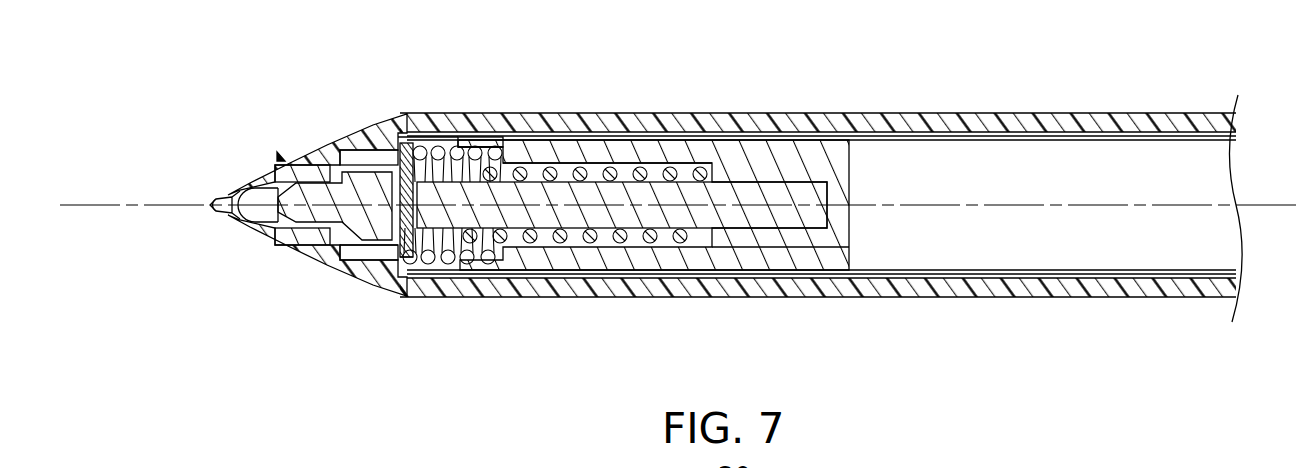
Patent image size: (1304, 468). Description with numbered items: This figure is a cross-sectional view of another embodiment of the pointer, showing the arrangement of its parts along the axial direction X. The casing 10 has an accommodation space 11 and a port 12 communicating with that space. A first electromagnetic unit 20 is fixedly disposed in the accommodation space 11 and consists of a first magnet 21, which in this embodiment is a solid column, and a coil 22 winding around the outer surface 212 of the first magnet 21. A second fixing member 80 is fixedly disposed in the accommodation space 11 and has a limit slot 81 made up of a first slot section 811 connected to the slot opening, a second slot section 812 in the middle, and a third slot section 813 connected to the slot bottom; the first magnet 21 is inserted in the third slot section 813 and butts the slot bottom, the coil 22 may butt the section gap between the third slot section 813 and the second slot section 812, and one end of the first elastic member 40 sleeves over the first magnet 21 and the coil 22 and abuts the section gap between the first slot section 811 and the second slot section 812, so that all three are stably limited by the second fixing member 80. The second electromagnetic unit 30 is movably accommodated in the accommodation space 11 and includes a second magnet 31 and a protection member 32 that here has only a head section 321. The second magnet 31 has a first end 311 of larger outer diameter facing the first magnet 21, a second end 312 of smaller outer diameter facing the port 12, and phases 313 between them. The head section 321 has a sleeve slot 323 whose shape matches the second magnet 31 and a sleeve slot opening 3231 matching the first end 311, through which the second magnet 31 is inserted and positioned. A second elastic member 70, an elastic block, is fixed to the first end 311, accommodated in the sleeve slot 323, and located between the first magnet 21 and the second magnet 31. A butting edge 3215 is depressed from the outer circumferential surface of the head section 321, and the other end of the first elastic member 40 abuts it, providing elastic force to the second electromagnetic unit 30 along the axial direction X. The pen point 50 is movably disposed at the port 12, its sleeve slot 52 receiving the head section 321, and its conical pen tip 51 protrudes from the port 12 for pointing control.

The casing 10 is at (1117, 112).
The accommodation space 11 is at (444, 140).
The port 12 is at (279, 158).
The first electromagnetic unit 20 is at (622, 117).
The first magnet 21 is at (762, 195).
The outer surface 212 is at (598, 163).
The coil 22 is at (595, 117).
The second electromagnetic unit 30 is at (273, 203).
The second magnet 31 is at (388, 170).
The first end 311 is at (463, 146).
The second end 312 is at (290, 160).
The phase 313 is at (333, 150).
The protection member 32 is at (309, 290).
The head section 321 is at (303, 245).
The sleeve slot 323 is at (440, 220).
The butting edge 3215 is at (416, 147).
The sleeve slot opening 3231 is at (417, 250).
The first elastic member 40 is at (503, 150).
The pen point 50 is at (174, 219).
The pen tip 51 is at (212, 205).
The sleeve slot 52 is at (248, 196).
The second elastic member 70 is at (398, 243).
The second fixing member 80 is at (853, 222).
The limit slot 81 is at (626, 314).
The first slot section 811 is at (488, 264).
The second slot section 812 is at (566, 243).
The third slot section 813 is at (780, 300).
The axial direction X is at (1265, 204).